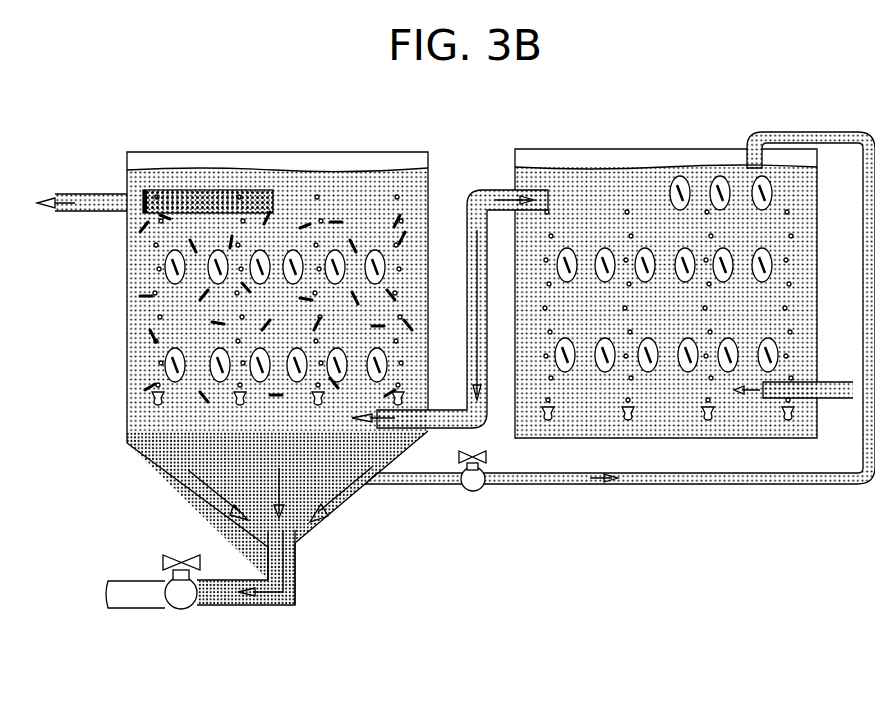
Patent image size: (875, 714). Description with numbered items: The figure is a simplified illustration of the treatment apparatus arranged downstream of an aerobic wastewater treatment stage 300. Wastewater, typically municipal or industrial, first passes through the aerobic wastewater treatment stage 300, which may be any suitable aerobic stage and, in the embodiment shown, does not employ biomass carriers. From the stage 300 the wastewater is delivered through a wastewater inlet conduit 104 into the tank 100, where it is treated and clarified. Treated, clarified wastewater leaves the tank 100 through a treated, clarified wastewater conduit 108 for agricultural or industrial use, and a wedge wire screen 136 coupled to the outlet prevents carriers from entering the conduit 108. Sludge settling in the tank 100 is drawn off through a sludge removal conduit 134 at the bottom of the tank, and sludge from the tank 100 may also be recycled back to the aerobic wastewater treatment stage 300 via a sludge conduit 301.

The tank 100 is at (196, 151).
The wedge wire screen 136 is at (216, 189).
The treated, clarified wastewater conduit 108 is at (78, 192).
The aerobic wastewater treatment stage 300 is at (667, 149).
The wastewater inlet conduit 104 is at (443, 408).
The sludge conduit 301 is at (666, 484).
The sludge removal conduit 134 is at (264, 607).